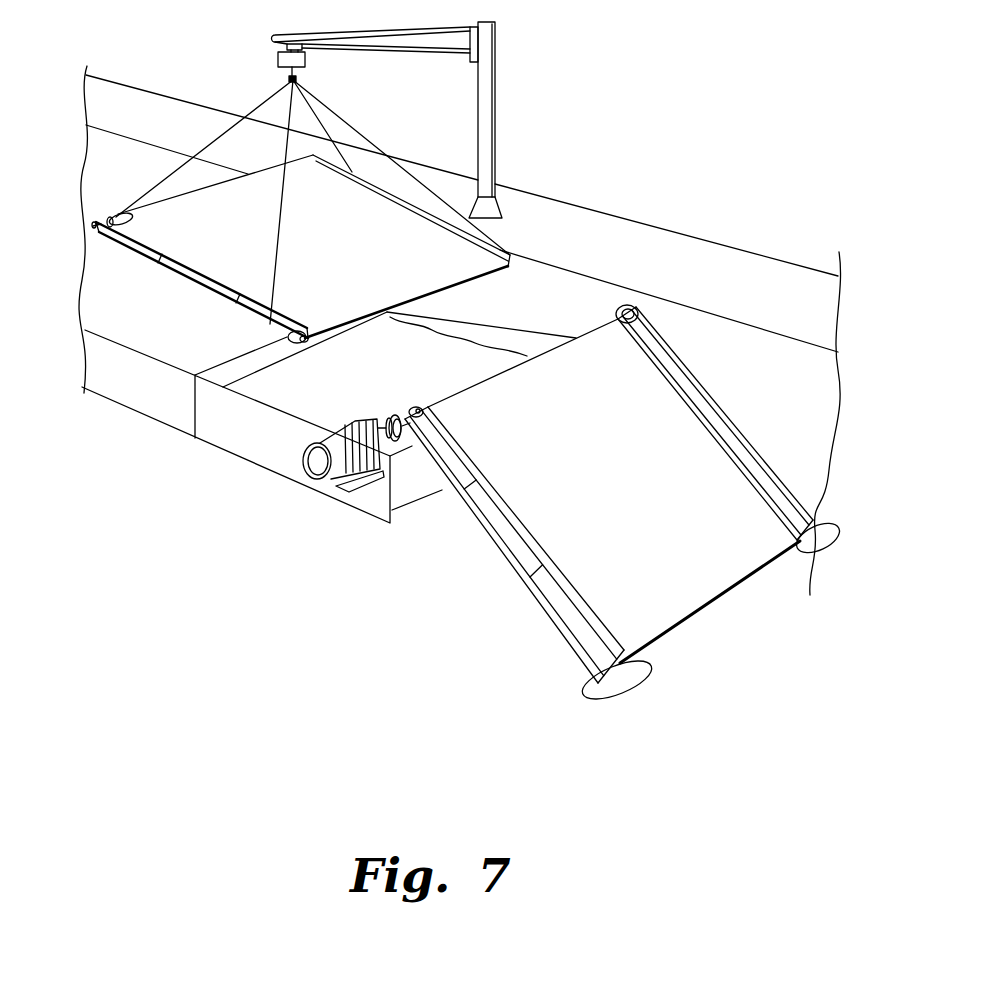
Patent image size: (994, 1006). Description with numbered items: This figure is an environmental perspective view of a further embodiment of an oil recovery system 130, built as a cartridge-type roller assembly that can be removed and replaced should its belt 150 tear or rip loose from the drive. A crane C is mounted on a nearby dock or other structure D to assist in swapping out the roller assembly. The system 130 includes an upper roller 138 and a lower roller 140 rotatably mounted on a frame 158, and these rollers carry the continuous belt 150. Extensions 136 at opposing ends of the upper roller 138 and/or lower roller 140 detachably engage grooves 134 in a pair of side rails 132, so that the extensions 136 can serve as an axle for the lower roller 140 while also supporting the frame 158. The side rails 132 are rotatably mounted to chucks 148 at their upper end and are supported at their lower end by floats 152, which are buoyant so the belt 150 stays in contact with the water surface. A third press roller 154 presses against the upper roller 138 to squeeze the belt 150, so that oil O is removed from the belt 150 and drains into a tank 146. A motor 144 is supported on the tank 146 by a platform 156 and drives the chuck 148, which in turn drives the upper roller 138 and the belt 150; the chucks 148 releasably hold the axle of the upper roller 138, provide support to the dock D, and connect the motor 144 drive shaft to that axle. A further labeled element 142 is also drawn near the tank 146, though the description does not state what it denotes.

The oil recovery system 130 is at (604, 268).
The side rails 132 is at (562, 640).
The grooves 134 is at (750, 456).
The extensions 136 is at (295, 339).
The upper roller 138 is at (100, 221).
The lower roller 140 is at (645, 648).
The support corner 142 is at (392, 460).
The motor 144 is at (300, 470).
The tank 146 is at (230, 440).
The chucks 148 is at (630, 305).
The belt 150 is at (604, 476).
The floats 152 is at (812, 553).
The press roller 154 is at (118, 215).
The platform 156 is at (345, 487).
The frame 158 is at (192, 283).
The crane C is at (495, 125).
The dock D is at (722, 281).
The oil O is at (416, 364).